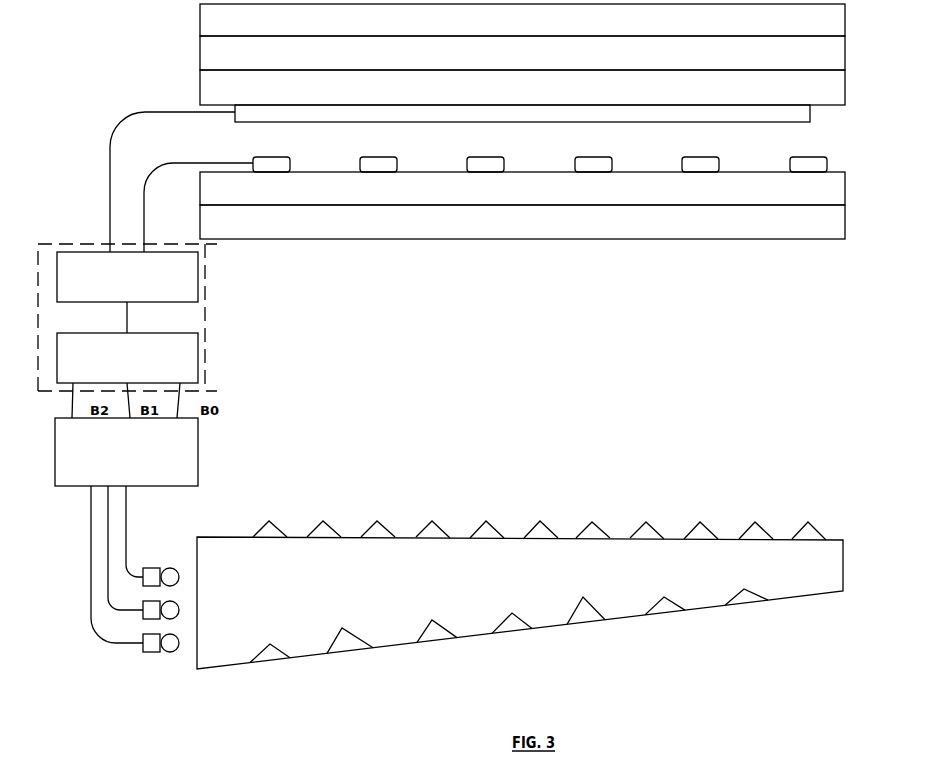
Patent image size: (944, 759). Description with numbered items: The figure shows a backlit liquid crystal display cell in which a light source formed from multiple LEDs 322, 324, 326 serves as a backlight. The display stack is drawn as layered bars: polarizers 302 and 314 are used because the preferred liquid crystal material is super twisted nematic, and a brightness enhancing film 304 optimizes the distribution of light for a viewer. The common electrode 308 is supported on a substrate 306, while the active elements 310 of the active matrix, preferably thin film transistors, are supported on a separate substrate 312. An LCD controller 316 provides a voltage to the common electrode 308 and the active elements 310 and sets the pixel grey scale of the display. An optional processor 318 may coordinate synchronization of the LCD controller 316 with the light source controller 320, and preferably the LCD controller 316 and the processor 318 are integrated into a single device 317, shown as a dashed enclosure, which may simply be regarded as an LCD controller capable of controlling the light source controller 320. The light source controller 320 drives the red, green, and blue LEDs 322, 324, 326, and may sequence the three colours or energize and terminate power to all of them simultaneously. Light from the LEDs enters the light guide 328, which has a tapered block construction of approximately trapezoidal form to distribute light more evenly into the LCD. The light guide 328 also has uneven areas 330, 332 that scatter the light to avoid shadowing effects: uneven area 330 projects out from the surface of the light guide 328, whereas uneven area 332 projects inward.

The polarizer 302 is at (662, 30).
The brightness enhancing film 304 is at (533, 63).
The substrate 306 is at (625, 101).
The common electrode 308 is at (535, 123).
The active elements 310 is at (541, 192).
The substrate 312 is at (554, 196).
The polarizer 314 is at (450, 229).
The LCD controller 316 is at (140, 286).
The single device 317 is at (157, 317).
The processor 318 is at (140, 368).
The light source controller 320 is at (140, 461).
The LED 322 is at (162, 555).
The LED 324 is at (147, 603).
The LED 326 is at (139, 675).
The light guide 328 is at (570, 580).
The uneven area 330 is at (539, 515).
The uneven area 332 is at (509, 626).